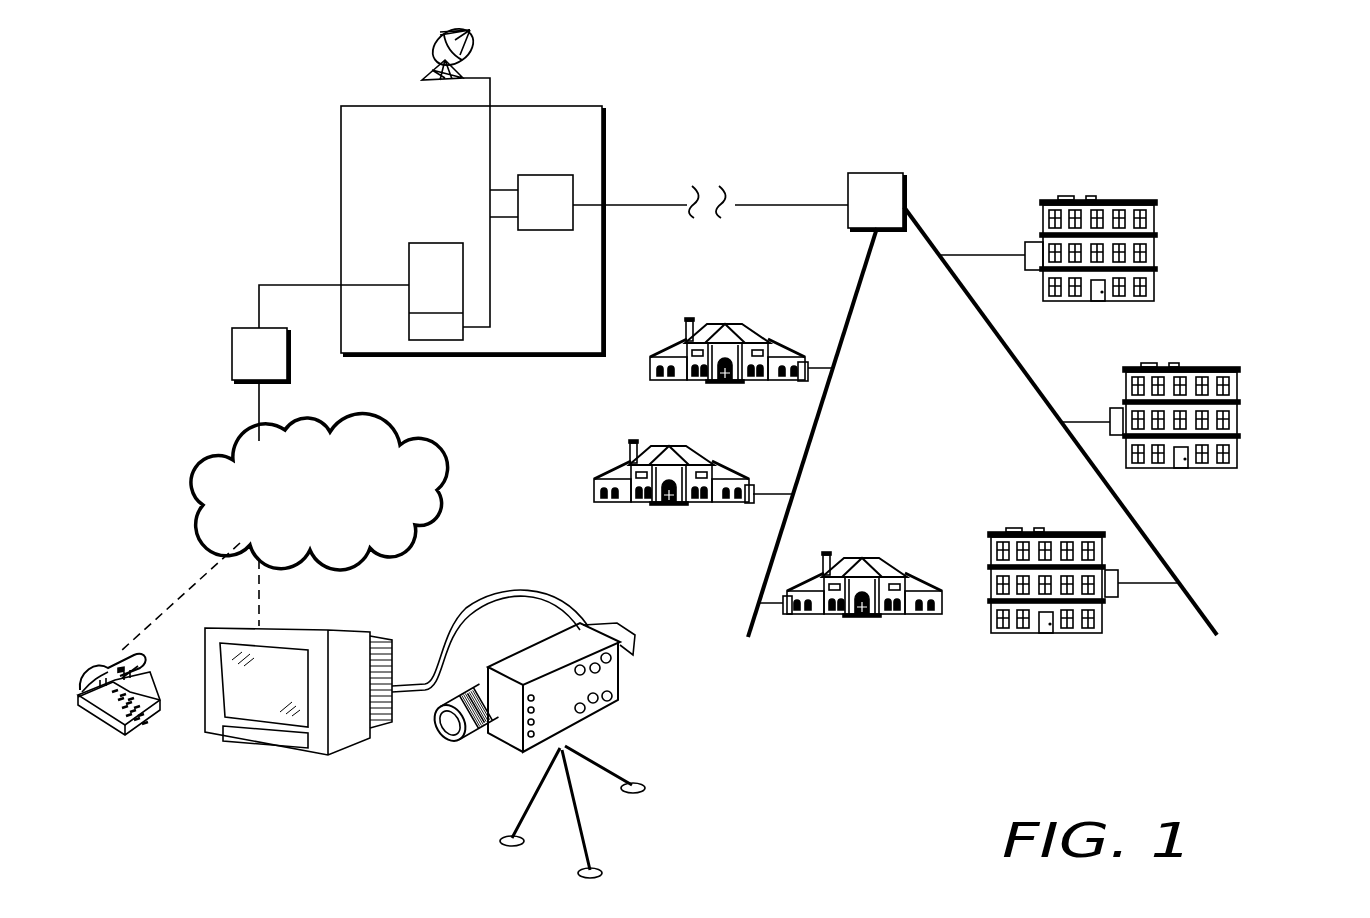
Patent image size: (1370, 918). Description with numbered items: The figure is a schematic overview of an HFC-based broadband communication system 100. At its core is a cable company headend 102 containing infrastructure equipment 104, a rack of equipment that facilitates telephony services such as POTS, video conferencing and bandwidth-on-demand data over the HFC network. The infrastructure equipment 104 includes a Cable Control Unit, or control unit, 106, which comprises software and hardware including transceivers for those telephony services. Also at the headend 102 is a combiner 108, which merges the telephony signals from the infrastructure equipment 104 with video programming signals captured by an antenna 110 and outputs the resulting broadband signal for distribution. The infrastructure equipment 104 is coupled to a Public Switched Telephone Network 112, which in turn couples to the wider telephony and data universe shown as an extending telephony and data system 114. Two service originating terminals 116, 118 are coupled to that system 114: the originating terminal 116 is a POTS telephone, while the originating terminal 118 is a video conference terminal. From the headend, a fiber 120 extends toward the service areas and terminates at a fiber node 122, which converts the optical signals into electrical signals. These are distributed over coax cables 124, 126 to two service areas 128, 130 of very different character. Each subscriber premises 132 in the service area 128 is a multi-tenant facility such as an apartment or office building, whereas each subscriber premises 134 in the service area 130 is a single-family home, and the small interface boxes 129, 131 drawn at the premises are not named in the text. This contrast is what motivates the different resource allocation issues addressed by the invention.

The communication system 100 is at (1113, 778).
The headend 102 is at (341, 104).
The infrastructure equipment 104 is at (466, 243).
The Cable Control Unit (CCU) 106 is at (463, 343).
The combiner 108 is at (518, 175).
The antenna 110 is at (482, 53).
The Public Switched Telephone Network (PSTN) 112 is at (232, 326).
The extending telephony and data system 114 is at (423, 513).
The originating terminal 116 is at (100, 660).
The originating terminal 118 is at (343, 732).
The fiber 120 is at (640, 202).
The fiber node 122 is at (848, 173).
The coax cable 124 is at (925, 223).
The coax cable 126 is at (860, 268).
The service area 128 is at (1237, 220).
The building interface unit 129 is at (1023, 240).
The service area 130 is at (713, 547).
The home interface unit 131 is at (810, 360).
The subscriber premises 132 is at (1132, 200).
The subscriber premises 134 is at (700, 322).